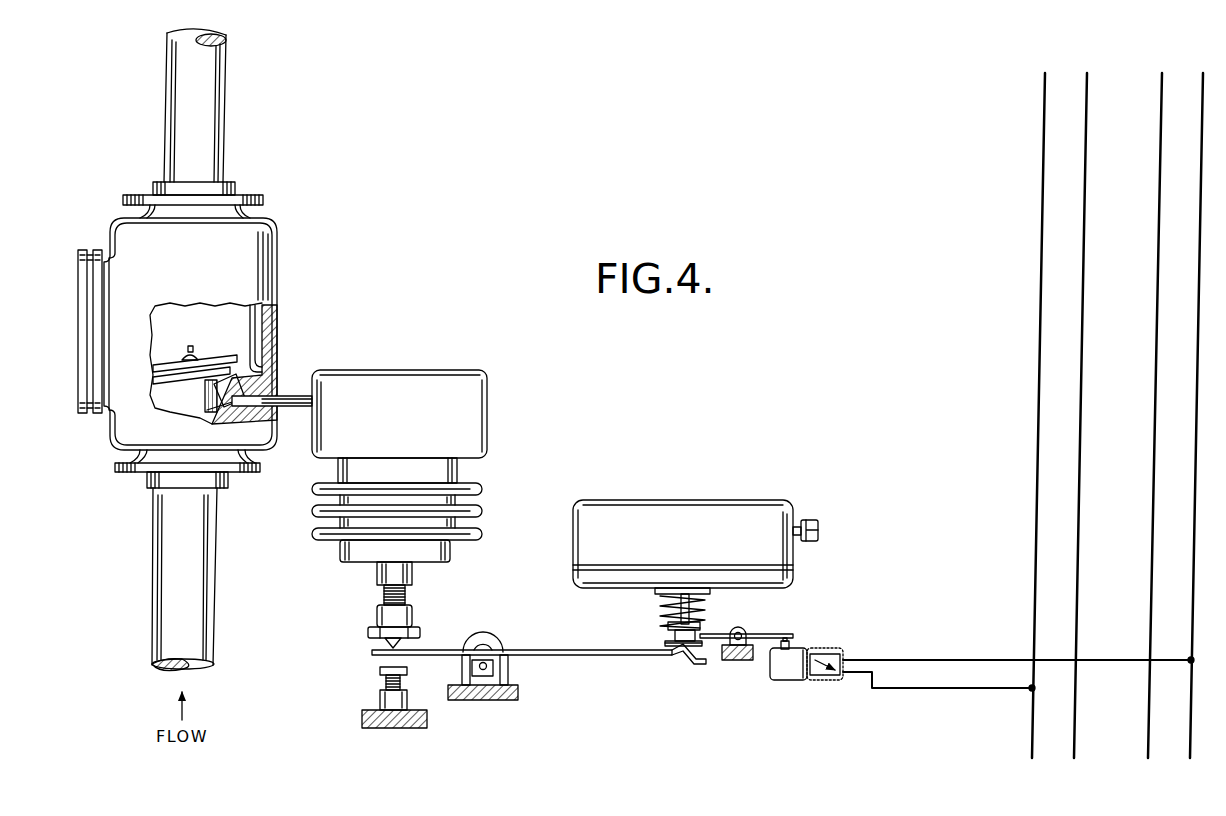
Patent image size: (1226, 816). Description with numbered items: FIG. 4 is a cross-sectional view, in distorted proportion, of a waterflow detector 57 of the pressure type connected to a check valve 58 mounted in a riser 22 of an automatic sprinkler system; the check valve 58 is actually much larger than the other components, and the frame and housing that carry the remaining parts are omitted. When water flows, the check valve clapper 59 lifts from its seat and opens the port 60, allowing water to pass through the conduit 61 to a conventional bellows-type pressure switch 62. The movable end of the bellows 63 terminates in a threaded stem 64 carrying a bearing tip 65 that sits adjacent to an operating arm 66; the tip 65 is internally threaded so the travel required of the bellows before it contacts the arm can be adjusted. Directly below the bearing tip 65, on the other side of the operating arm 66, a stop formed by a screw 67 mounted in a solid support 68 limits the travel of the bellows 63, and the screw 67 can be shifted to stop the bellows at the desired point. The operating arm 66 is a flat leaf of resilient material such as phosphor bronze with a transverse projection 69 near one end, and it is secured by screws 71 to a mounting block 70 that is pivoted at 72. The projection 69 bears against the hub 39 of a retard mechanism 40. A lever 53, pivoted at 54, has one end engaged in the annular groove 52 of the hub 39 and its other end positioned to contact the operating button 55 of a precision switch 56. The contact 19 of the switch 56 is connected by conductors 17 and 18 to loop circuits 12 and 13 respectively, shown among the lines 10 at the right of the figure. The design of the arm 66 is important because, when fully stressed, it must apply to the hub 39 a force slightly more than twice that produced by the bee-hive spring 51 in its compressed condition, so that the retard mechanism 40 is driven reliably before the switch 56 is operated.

The power lines 10 is at (1085, 415).
The loop circuit 12 is at (1188, 722).
The loop circuit 13 is at (1075, 720).
The conductor 17 is at (924, 660).
The conductor 18 is at (932, 688).
The contact 19 is at (831, 660).
The riser 22 is at (224, 108).
The hub 39 is at (664, 642).
The retard mechanism 40 is at (689, 492).
The bee-hive spring 51 is at (706, 600).
The annular groove 52 is at (672, 630).
The lever 53 is at (775, 634).
The pivot 54 is at (741, 631).
The operating button 55 is at (790, 646).
The precision switch 56 is at (790, 680).
The waterflow detector 57 is at (354, 304).
The check valve 58 is at (107, 443).
The check valve clapper 59 is at (198, 366).
The port 60 is at (214, 393).
The conduit 61 is at (293, 408).
The pressure switch 62 is at (405, 370).
The bellows 63 is at (482, 516).
The threaded stem 64 is at (384, 593).
The bearing tip 65 is at (420, 613).
The operating arm 66 is at (552, 650).
The screw 67 is at (380, 669).
The solid support 68 is at (380, 698).
The transverse projection 69 is at (686, 666).
The mounting block 70 is at (462, 669).
The screws 71 is at (482, 644).
The pivot 72 is at (493, 666).